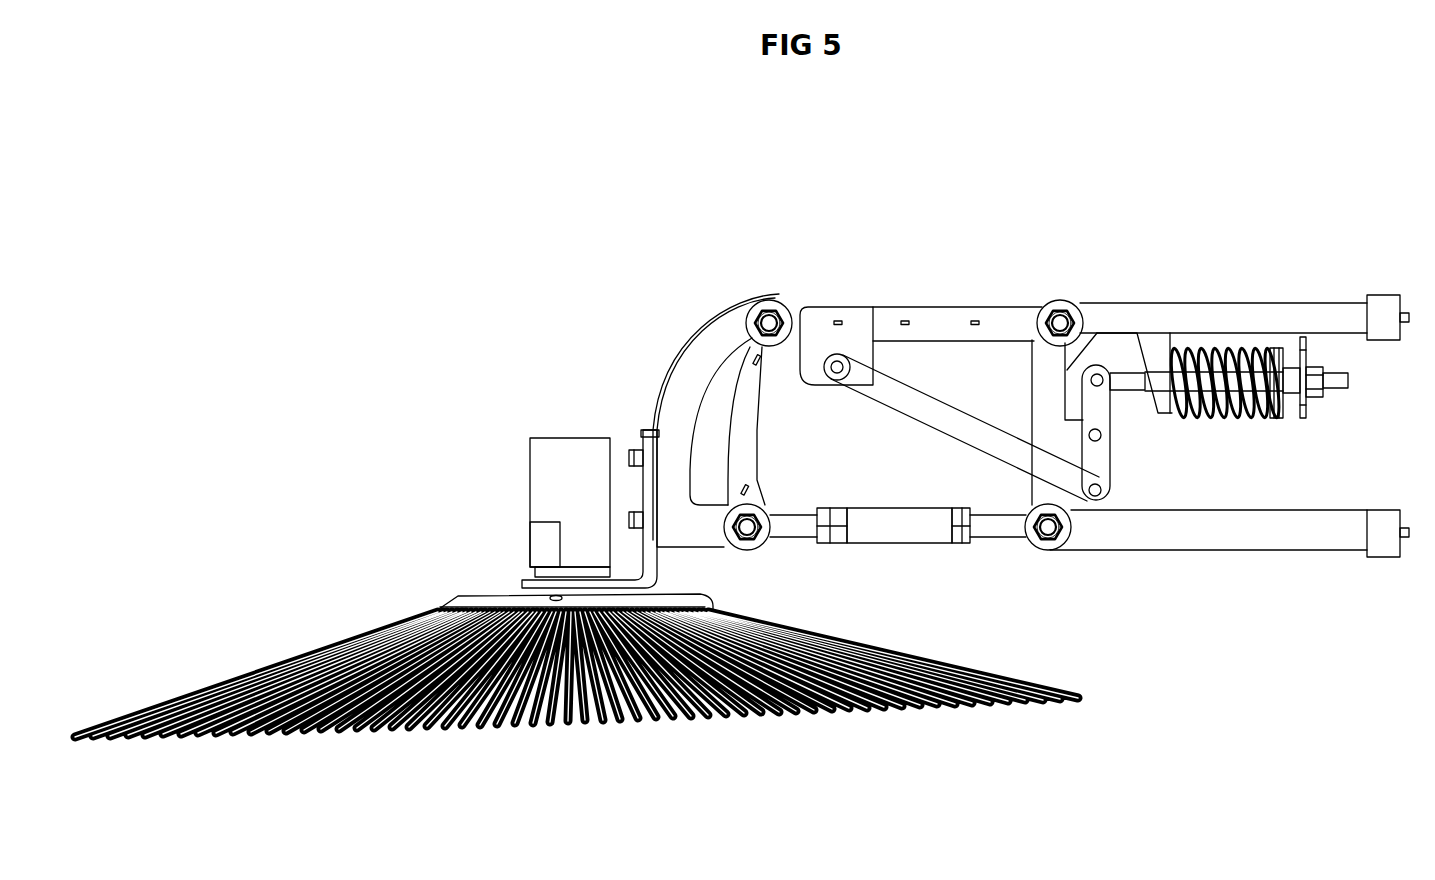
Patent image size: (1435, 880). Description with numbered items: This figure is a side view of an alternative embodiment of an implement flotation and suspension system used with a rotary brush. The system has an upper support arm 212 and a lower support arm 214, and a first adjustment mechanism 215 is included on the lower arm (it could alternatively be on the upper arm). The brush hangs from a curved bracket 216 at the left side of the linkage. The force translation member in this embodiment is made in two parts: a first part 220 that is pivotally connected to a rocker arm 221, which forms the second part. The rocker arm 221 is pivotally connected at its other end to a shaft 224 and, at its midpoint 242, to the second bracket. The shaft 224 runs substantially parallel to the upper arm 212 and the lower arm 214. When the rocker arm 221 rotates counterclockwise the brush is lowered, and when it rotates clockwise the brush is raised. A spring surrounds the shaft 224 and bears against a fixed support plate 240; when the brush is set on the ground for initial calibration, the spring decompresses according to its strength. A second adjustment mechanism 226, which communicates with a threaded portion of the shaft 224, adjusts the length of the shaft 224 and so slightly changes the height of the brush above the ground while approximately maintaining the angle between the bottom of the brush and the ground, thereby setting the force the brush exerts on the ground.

The upper support arm 212 is at (918, 304).
The lower support arm 214 is at (796, 541).
The first adjustment mechanism 215 is at (911, 546).
The curved bracket 216 is at (688, 340).
The first part of force translation member 220 is at (931, 427).
The rocker arm 221 is at (1112, 472).
The shaft 224 is at (1232, 380).
The second adjustment mechanism 226 is at (1308, 412).
The fixed support plate 240 is at (1281, 416).
The midpoint 242 is at (1103, 437).